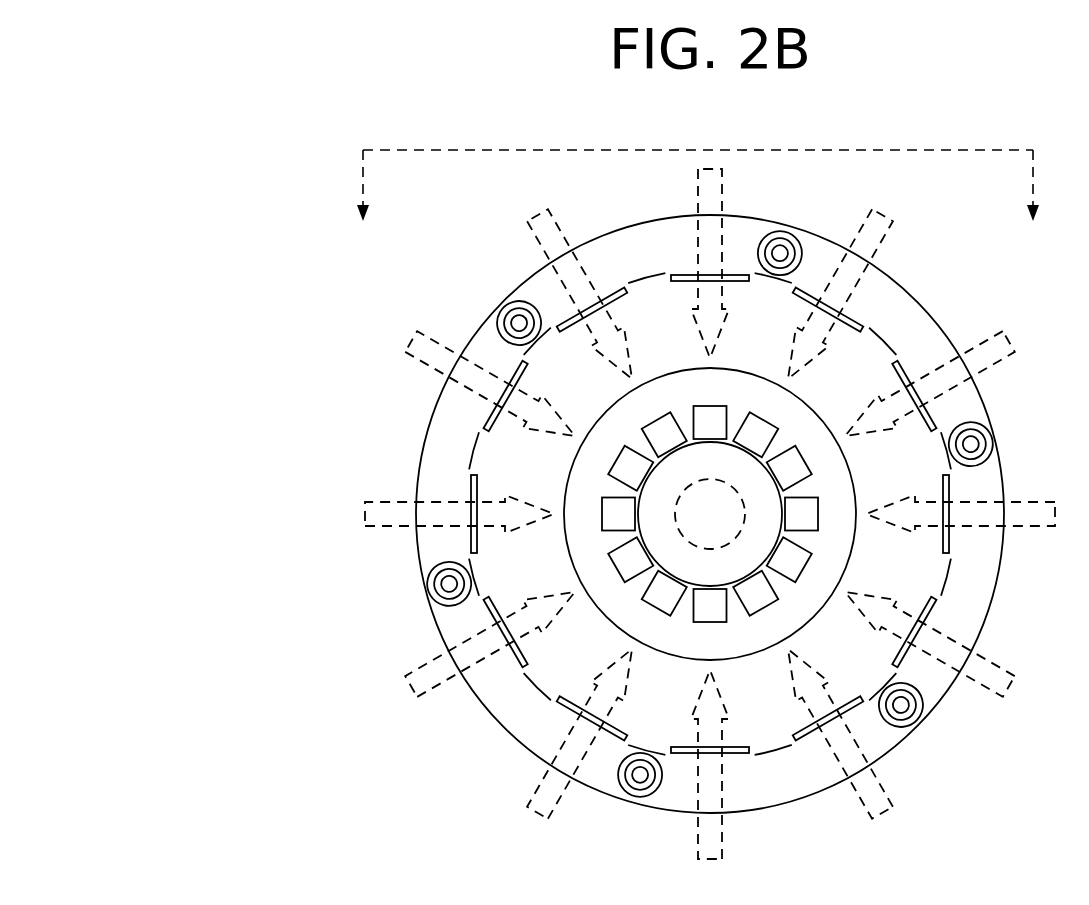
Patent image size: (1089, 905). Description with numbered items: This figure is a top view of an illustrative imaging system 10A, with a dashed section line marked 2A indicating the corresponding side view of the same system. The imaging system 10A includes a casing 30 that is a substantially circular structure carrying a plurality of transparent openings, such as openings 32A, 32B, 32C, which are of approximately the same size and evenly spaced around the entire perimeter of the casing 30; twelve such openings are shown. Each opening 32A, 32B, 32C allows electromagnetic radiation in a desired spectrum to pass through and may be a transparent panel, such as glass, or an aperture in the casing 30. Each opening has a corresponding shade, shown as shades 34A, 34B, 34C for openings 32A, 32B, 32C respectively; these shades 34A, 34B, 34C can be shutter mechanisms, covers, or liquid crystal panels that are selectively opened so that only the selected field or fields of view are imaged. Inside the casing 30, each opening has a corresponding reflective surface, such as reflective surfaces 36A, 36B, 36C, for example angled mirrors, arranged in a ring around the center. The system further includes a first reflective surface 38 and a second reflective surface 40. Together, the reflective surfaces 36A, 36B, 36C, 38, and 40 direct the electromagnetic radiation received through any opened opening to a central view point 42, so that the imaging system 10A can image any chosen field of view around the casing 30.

The section line 2A is at (697, 197).
The imaging system 10A is at (300, 275).
The casing 30 is at (745, 221).
The opening 32A is at (849, 305).
The opening 32B is at (686, 260).
The opening 32C is at (605, 282).
The shade 34A is at (862, 304).
The shade 34B is at (728, 283).
The shade 34C is at (611, 309).
The reflective surface 36A is at (753, 410).
The reflective surface 36B is at (697, 406).
The reflective surface 36C is at (640, 437).
The first reflective surface 38 is at (699, 474).
The second reflective surface 40 is at (808, 404).
The view point 42 is at (699, 526).